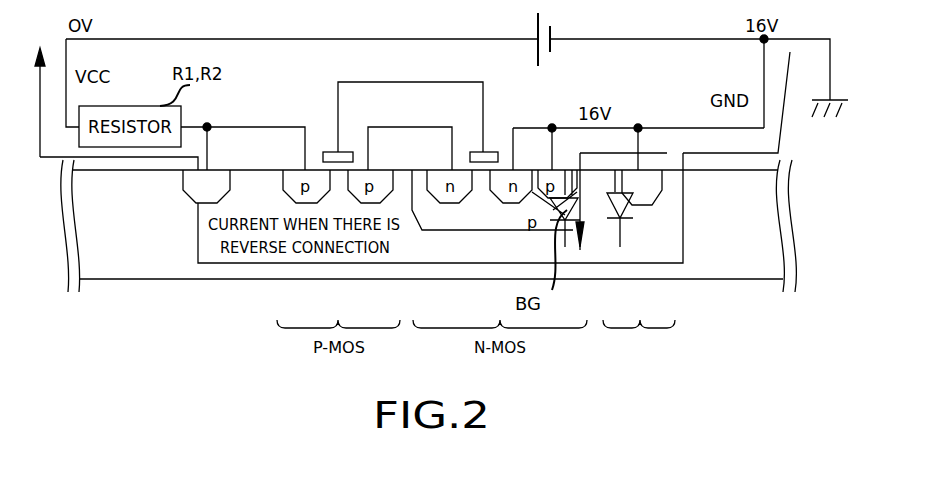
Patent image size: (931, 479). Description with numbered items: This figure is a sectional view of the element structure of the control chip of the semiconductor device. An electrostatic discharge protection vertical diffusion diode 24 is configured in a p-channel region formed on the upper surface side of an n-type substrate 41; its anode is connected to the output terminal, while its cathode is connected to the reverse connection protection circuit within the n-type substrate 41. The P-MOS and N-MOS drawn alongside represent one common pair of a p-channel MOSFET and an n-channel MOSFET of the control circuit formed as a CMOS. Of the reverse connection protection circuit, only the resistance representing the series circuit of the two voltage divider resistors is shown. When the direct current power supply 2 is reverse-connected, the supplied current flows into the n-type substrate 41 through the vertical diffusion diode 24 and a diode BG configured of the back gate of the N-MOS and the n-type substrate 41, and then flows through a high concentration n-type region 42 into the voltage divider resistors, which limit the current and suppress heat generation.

The direct current power supply 2 is at (537, 27).
The high concentration n-type region 42 is at (220, 180).
The n-type substrate 41 is at (755, 218).
The vertical diffusion diode 24 is at (642, 293).